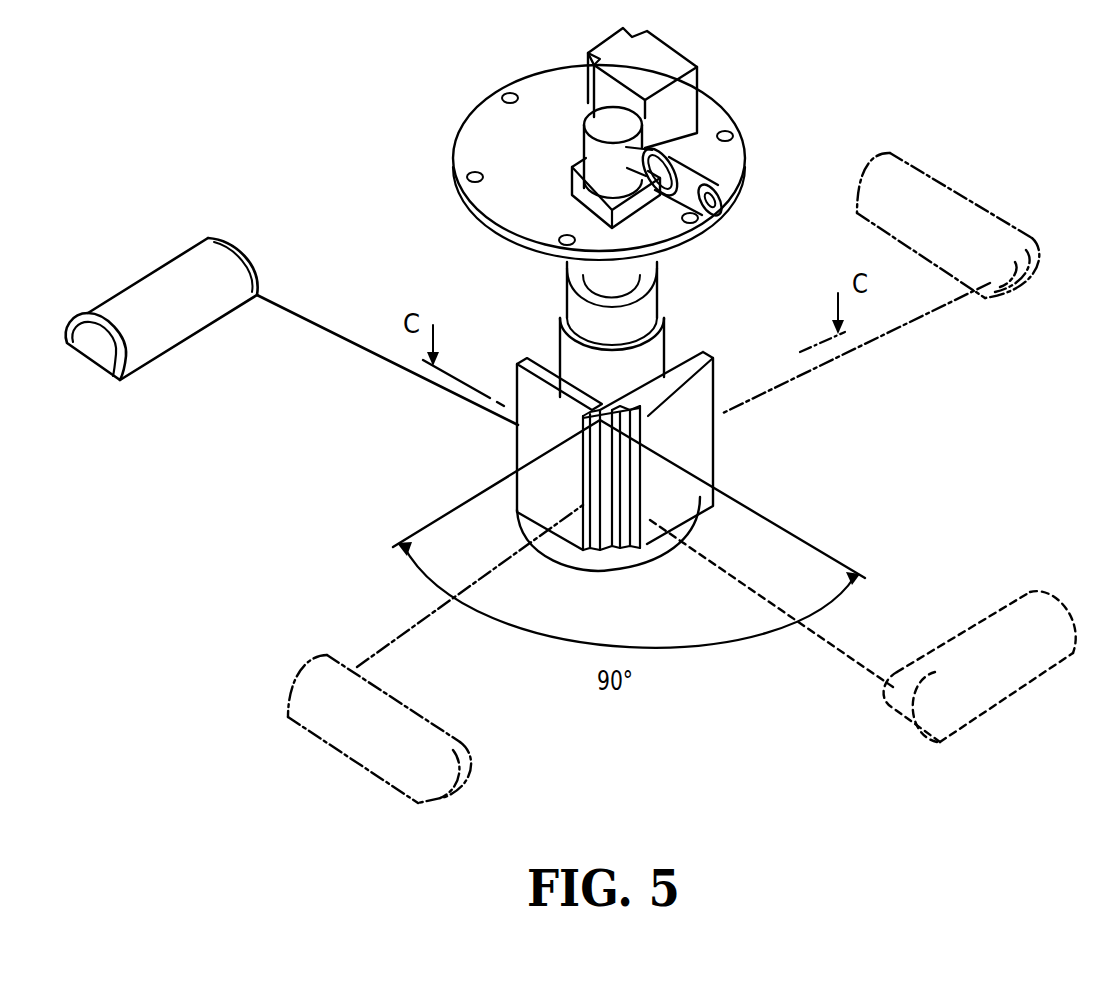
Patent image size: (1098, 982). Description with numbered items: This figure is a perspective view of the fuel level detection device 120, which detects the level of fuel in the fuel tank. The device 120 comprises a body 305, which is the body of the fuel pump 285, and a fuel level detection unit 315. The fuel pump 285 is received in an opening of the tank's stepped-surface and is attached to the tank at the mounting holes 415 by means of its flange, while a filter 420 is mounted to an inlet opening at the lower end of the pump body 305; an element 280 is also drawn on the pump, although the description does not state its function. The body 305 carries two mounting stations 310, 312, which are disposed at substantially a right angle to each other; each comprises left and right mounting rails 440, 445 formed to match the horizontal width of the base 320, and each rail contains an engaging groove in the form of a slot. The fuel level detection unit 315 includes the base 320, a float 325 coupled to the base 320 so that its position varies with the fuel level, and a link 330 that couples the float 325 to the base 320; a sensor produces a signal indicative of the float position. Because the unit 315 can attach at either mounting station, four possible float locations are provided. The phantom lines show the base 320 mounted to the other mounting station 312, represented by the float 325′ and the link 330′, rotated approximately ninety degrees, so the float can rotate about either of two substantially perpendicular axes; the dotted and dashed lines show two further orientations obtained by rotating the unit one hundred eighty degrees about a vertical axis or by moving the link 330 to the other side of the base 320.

The fuel level detection device 120 is at (318, 125).
The fuel pump 285 is at (752, 70).
The mounting holes 415 is at (742, 152).
The drive shaft 280 is at (748, 193).
The body 305 is at (665, 343).
The filter 420 is at (620, 562).
The base 320 is at (533, 490).
The mounting station 312 is at (680, 422).
The left mounting rail 440 is at (525, 363).
The right mounting rail 445 is at (713, 460).
The mounting station 310 is at (550, 425).
The fuel level detection unit 315 is at (488, 372).
The link 330 is at (382, 359).
The float 325 is at (180, 335).
The link 330′ is at (382, 648).
The float 325′ is at (300, 667).